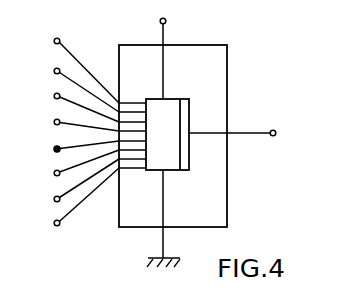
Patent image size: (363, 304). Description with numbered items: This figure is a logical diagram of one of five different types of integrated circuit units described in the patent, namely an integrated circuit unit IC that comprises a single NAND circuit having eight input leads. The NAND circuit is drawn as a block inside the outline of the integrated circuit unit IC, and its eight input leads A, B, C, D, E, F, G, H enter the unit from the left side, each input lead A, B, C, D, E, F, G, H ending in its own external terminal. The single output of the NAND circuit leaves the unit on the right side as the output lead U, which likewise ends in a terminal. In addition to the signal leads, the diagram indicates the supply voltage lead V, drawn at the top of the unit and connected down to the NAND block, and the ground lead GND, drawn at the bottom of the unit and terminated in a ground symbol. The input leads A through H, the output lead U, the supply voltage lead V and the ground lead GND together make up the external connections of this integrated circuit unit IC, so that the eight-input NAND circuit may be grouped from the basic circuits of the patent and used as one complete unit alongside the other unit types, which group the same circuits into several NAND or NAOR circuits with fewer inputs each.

The input lead A is at (89, 66).
The input lead B is at (89, 85).
The input lead C is at (89, 103).
The input lead D is at (89, 122).
The input lead E is at (89, 149).
The input lead F is at (89, 167).
The input lead G is at (89, 185).
The input lead H is at (89, 201).
The output lead U is at (245, 134).
The supply voltage lead V is at (153, 49).
The integrated circuit unit IC is at (167, 134).
The ground lead GND is at (163, 218).